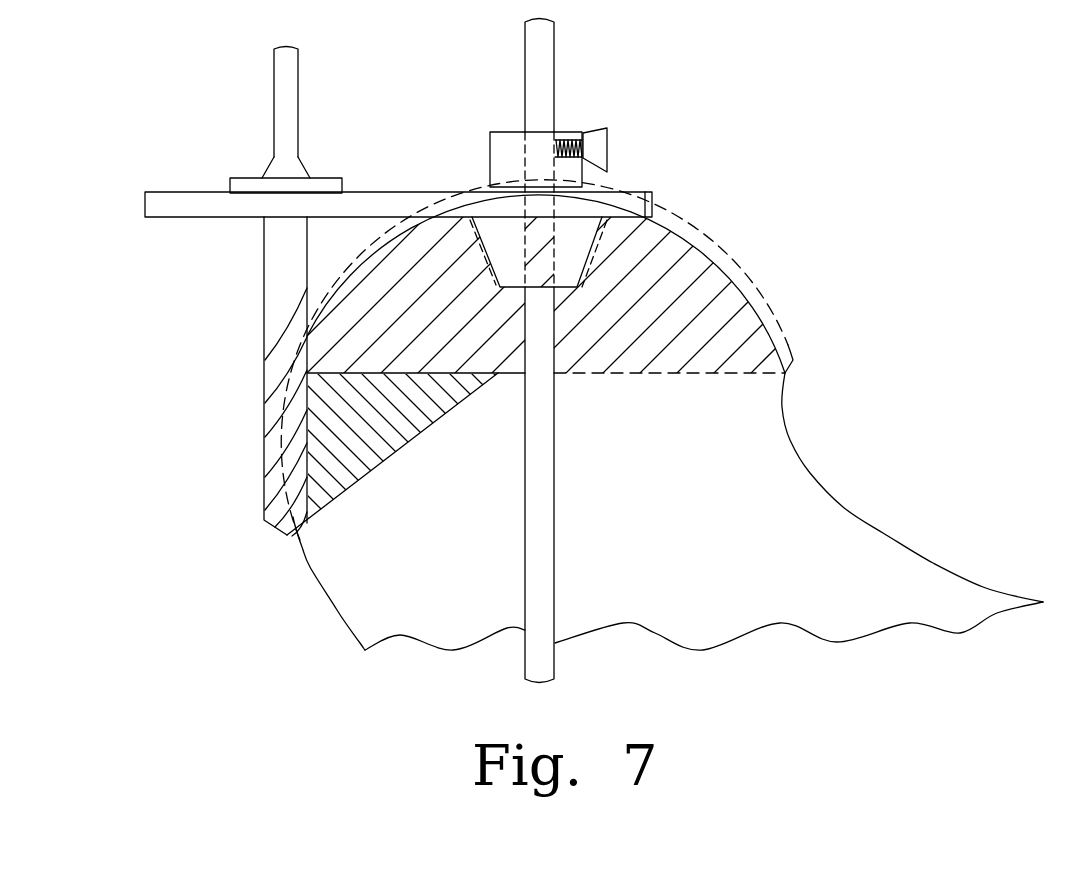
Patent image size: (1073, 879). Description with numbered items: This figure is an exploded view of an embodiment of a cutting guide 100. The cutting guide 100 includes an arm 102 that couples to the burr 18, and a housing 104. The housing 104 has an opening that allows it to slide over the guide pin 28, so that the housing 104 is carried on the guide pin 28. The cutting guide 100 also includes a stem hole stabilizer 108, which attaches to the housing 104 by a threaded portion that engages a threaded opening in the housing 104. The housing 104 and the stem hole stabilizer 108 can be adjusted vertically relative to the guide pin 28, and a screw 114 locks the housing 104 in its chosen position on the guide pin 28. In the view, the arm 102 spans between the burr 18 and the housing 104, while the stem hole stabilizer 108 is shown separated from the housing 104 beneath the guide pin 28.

The burr 18 is at (266, 272).
The guide pin 28 is at (556, 43).
The cutting guide 100 is at (650, 70).
The arm 102 is at (391, 192).
The housing 104 is at (566, 131).
The stem hole stabilizer 108 is at (592, 248).
The screw 114 is at (607, 149).